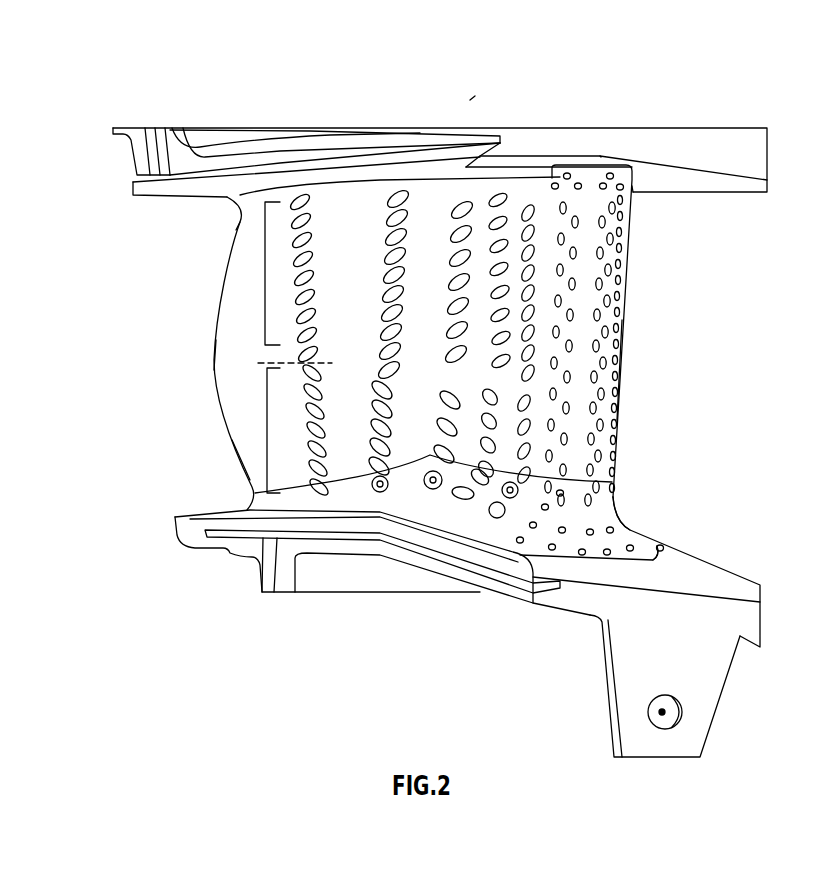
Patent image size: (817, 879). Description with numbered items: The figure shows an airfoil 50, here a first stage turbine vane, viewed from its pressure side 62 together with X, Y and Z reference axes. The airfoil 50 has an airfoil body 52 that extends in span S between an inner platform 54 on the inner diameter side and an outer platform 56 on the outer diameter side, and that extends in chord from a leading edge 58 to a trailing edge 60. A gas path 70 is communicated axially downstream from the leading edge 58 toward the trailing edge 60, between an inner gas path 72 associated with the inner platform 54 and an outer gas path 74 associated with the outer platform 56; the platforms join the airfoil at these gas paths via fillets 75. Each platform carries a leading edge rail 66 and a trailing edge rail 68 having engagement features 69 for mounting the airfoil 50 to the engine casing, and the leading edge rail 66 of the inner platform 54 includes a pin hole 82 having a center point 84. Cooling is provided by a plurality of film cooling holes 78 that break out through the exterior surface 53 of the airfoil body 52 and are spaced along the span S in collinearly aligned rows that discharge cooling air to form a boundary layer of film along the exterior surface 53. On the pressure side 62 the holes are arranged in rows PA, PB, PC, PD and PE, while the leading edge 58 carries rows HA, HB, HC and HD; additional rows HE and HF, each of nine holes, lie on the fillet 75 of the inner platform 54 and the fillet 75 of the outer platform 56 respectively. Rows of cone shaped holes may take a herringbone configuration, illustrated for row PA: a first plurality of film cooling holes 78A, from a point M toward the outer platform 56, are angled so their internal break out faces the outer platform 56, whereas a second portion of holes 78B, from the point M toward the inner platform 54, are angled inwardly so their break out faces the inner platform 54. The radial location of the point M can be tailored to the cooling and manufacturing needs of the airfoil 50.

The airfoil 50 is at (478, 100).
The airfoil body 52 is at (220, 298).
The exterior surface 53 is at (245, 455).
The inner platform 54 is at (407, 558).
The outer platform 56 is at (362, 148).
The leading edge 58 is at (590, 360).
The trailing edge 60 is at (218, 355).
The pressure side 62 is at (352, 244).
The leading edge rail 66 is at (726, 145).
The trailing edge rail 68 is at (128, 156).
The engagement feature 69 is at (112, 118).
The gas path 70 is at (652, 300).
The inner gas path 72 is at (640, 515).
The outer gas path 74 is at (648, 192).
The fillet 75 is at (603, 156).
The film cooling hole 78 is at (497, 315).
The first plurality of film cooling holes 78A is at (265, 283).
The second portion of the plurality of film cooling holes 78B is at (267, 428).
The pin hole 82 is at (660, 730).
The center point 84 is at (660, 712).
The point M is at (255, 370).
The span S is at (359, 190).
The X axis X is at (317, 700).
The Y axis Y is at (317, 700).
The Z axis Z is at (317, 635).
The row PA is at (302, 180).
The row PB is at (397, 180).
The row PC is at (452, 190).
The row PD is at (495, 180).
The row PE is at (526, 180).
The row HA is at (563, 205).
The row HB is at (575, 218).
The row HC is at (602, 253).
The row HD is at (613, 210).
The row HE is at (516, 520).
The row HF is at (590, 165).